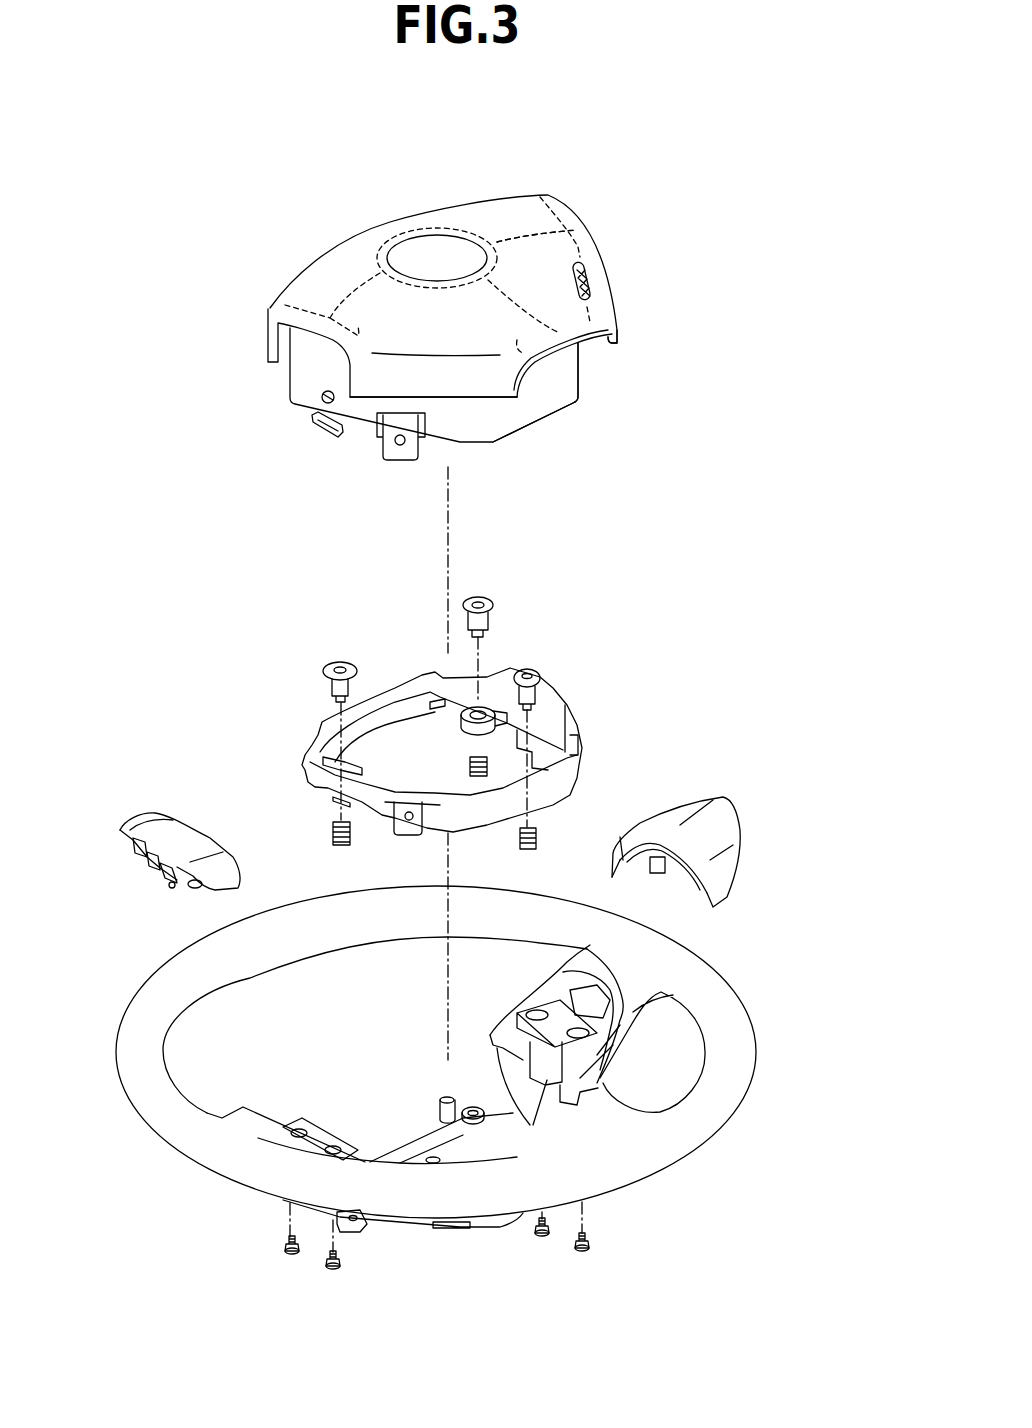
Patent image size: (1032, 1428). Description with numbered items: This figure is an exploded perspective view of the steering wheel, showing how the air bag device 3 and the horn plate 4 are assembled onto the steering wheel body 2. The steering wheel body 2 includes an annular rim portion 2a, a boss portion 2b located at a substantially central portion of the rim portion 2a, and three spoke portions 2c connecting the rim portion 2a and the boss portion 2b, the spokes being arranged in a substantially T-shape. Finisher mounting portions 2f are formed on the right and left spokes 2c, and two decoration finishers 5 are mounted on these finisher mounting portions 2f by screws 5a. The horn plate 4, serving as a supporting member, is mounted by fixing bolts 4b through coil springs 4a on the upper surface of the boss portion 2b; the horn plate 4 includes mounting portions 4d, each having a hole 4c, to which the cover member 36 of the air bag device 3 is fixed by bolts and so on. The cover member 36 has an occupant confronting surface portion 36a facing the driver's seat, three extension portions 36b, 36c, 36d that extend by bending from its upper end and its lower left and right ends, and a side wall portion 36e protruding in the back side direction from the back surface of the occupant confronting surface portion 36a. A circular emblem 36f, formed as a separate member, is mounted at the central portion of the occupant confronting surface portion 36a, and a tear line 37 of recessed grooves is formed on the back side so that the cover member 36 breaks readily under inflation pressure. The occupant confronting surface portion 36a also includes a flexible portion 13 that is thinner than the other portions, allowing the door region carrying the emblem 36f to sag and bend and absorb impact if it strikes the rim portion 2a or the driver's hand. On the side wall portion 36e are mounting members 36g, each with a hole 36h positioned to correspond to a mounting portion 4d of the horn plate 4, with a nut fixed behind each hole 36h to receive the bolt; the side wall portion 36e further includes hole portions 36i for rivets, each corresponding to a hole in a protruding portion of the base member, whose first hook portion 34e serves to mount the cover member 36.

The steering wheel body 2 is at (738, 985).
The rim portion 2a is at (690, 977).
The boss portion 2b is at (440, 1138).
The spoke portions 2c is at (603, 1083).
The finisher mounting portions 2f is at (560, 1020).
The air bag device 3 is at (566, 201).
The horn plate 4 is at (580, 725).
The coil springs 4a is at (333, 833).
The fixing bolts 4b is at (335, 665).
The hole 4c is at (395, 822).
The mounting portions 4d is at (418, 834).
The decoration finishers 5 is at (185, 845).
The screws 5a is at (333, 1277).
The flexible portion 13 is at (588, 277).
The first hook portion 34e is at (320, 433).
The cover member 36 is at (612, 288).
The occupant confronting surface portion 36a is at (494, 213).
The upper extension portion 36b is at (268, 348).
The extension portion 36c is at (503, 377).
The extension portion 36d is at (620, 338).
The side wall portion 36e is at (573, 375).
The emblem 36f is at (437, 257).
The mounting members 36g is at (405, 458).
The hole 36h is at (397, 442).
The hole portions 36i is at (323, 401).
The tear line 37 is at (530, 231).